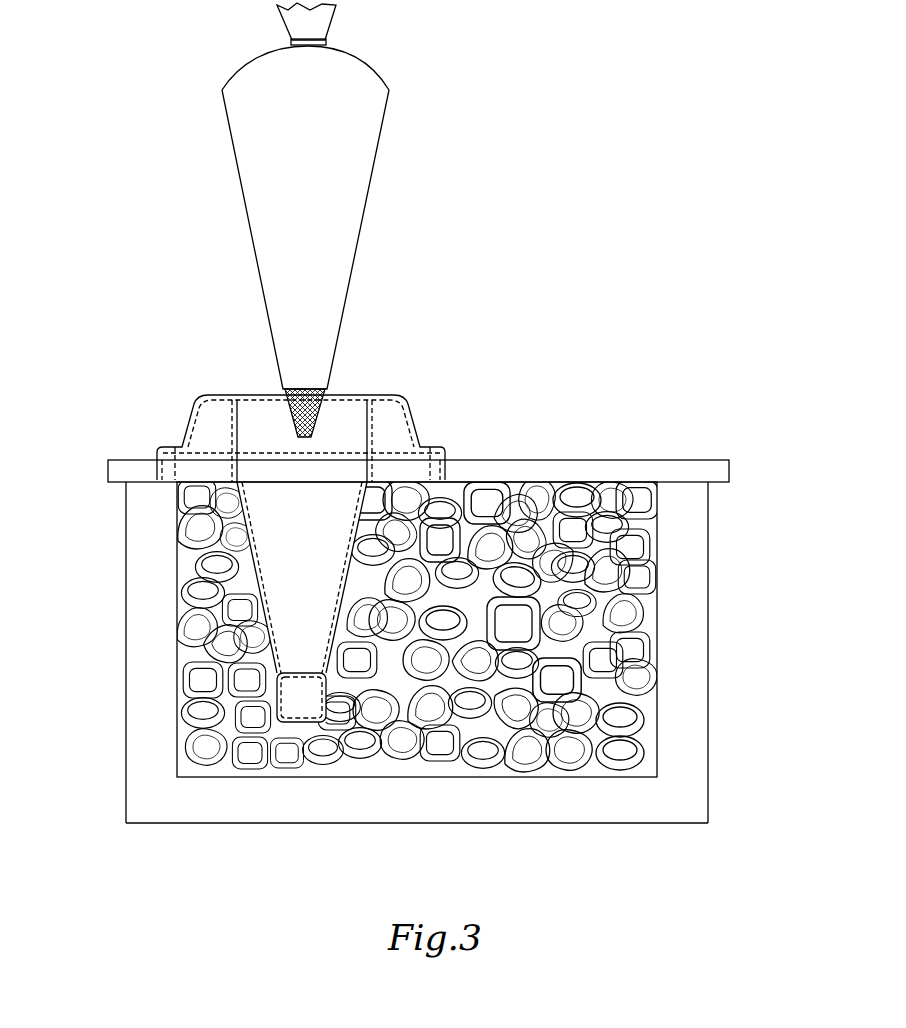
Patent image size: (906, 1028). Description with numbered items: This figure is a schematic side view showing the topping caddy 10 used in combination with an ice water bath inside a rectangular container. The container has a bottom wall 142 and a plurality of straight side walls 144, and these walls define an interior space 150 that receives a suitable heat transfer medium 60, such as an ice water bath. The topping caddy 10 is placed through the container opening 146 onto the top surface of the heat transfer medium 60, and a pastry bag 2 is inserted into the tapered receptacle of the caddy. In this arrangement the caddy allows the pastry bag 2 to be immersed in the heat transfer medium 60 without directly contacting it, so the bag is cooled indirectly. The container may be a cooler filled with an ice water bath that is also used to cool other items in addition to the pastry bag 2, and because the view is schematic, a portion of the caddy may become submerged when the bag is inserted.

The pastry bag 2 is at (380, 142).
The topping caddy 10 is at (415, 388).
The heat transfer medium 60 is at (525, 632).
The bottom wall 142 is at (559, 807).
The side walls 144 is at (682, 637).
The container opening 146 is at (568, 476).
The interior space 150 is at (344, 762).